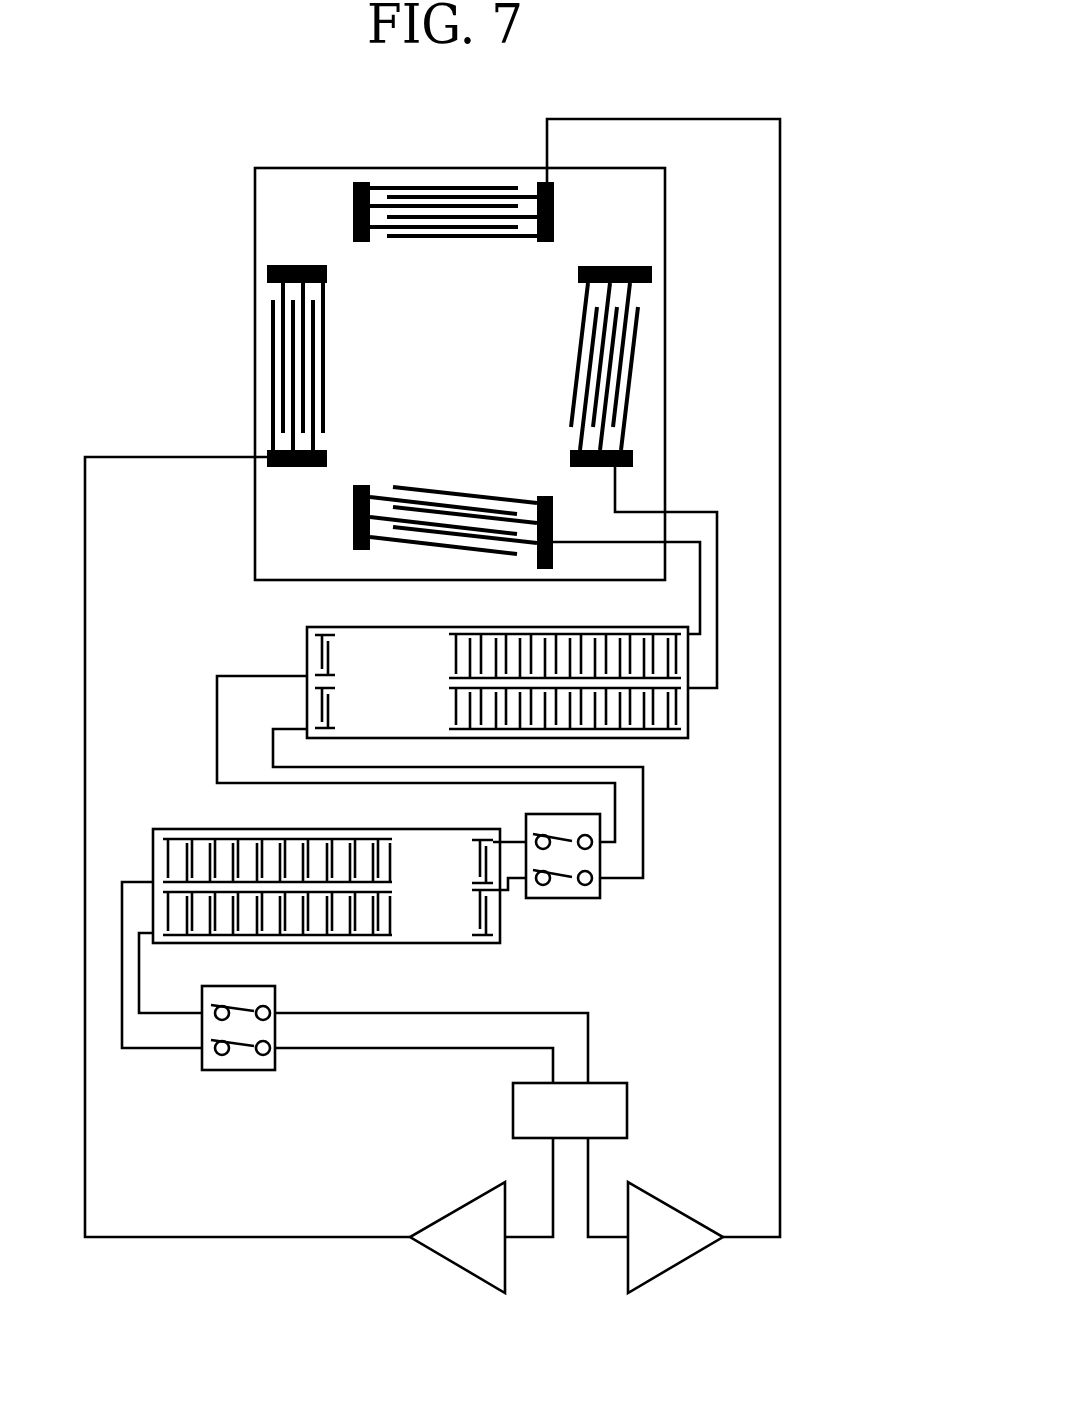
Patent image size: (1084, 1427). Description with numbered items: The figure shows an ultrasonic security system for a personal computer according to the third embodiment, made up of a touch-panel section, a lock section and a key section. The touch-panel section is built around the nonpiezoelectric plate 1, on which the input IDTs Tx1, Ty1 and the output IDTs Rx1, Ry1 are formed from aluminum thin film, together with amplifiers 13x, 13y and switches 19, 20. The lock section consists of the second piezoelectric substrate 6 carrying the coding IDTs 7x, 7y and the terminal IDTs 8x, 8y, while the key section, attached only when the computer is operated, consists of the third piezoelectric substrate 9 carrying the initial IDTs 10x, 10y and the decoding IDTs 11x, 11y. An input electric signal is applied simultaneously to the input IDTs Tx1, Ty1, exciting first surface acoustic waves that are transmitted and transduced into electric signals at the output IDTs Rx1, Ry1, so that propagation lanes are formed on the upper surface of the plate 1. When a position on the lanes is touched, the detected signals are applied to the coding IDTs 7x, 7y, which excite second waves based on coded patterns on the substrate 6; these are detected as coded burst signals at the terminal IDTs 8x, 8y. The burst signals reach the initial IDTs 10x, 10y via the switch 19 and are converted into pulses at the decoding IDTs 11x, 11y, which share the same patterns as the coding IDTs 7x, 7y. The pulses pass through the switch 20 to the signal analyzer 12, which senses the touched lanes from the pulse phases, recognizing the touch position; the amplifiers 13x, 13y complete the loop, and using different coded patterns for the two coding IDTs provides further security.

The nonpiezoelectric plate 1 is at (293, 182).
The input IDT Tx1 is at (407, 187).
The input IDT Ty1 is at (273, 380).
The output IDT Rx1 is at (393, 542).
The output IDT Ry1 is at (636, 328).
The second piezoelectric substrate 6 is at (433, 633).
The coding IDT 7x is at (552, 634).
The coding IDT 7y is at (662, 733).
The terminal IDT 8x is at (307, 642).
The terminal IDT 8y is at (307, 697).
The third piezoelectric substrate 9 is at (413, 935).
The initial IDT 10x is at (478, 862).
The initial IDT 10y is at (490, 923).
The decoding IDT 11x is at (217, 840).
The decoding IDT 11y is at (208, 933).
The signal analyzer 12 is at (513, 1119).
The amplifier 13x is at (442, 1225).
The amplifier 13y is at (662, 1215).
The switch 19 is at (583, 893).
The switch 20 is at (213, 1062).